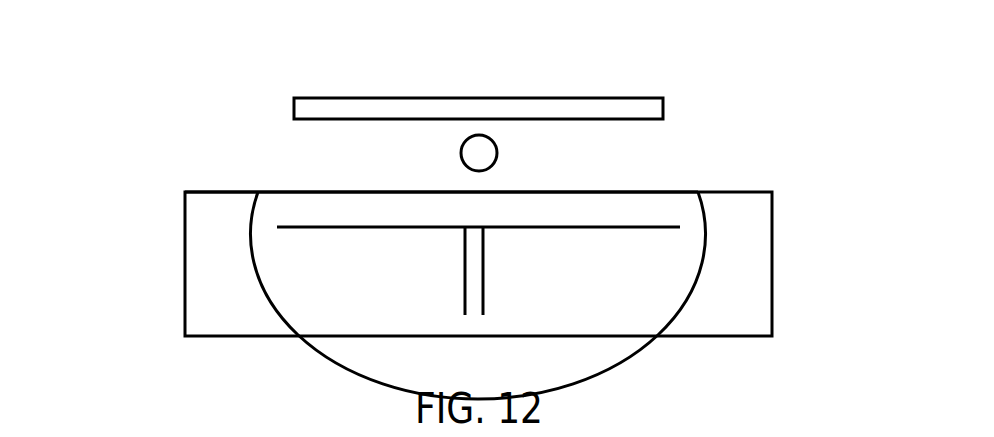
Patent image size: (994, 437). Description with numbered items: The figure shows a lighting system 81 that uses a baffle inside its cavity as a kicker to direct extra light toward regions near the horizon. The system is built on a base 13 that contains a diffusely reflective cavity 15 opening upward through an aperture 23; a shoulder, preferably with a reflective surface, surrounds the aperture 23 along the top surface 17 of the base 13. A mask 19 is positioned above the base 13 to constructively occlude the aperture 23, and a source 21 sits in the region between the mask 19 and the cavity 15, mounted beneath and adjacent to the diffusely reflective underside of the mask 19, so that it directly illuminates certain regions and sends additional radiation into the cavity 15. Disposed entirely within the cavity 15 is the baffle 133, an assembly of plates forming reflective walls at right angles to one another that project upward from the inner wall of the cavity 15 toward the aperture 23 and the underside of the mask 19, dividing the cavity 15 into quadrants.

The light emitting assembly 81 is at (140, 60).
The base 13 is at (531, 246).
The diffusely reflective cavity 15 is at (566, 295).
The top surface of base 17 is at (205, 156).
The aperture 23 is at (451, 138).
The baffle 133 is at (559, 182).
The mask 19 is at (505, 75).
The source 21 is at (524, 100).